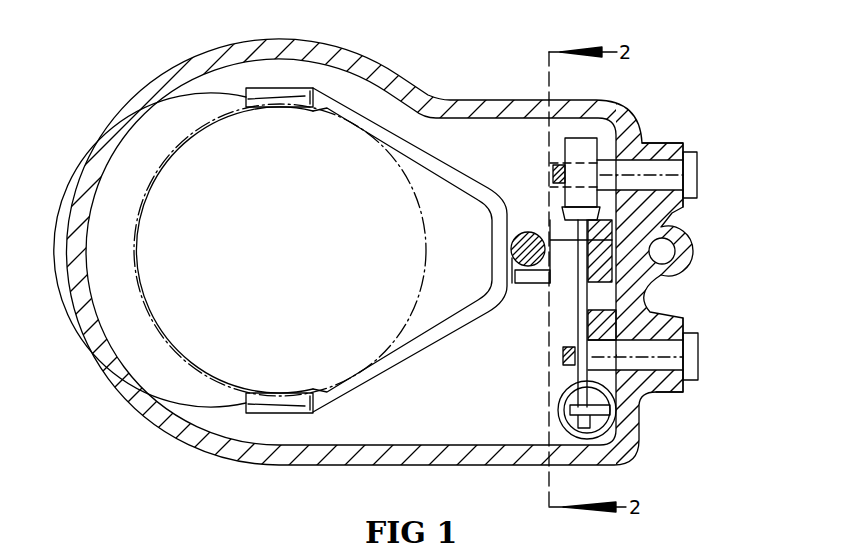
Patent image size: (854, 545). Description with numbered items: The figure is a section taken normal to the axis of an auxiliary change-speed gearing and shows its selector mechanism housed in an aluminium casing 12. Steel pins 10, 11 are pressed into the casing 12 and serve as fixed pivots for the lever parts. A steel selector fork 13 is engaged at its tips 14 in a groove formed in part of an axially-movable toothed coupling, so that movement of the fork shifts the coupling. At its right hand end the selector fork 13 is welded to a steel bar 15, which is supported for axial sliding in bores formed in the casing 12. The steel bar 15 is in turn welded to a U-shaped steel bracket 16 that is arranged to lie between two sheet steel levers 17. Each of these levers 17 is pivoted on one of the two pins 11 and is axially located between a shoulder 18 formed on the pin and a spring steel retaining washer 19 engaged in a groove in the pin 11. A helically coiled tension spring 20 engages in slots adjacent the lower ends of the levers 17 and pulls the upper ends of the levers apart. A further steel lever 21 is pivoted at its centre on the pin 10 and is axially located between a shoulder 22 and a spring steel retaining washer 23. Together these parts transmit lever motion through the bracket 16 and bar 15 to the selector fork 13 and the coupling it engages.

The steel pin 10 is at (697, 161).
The steel pin 11 is at (697, 367).
The aluminium casing 12 is at (405, 90).
The steel selector fork 13 is at (461, 174).
The tips 14 is at (289, 96).
The steel bar 15 is at (510, 253).
The U-shaped steel bracket 16 is at (602, 263).
The sheet steel lever 17 is at (583, 304).
The shoulder 18 is at (632, 372).
The spring steel retaining washer 19 is at (575, 366).
The helically coiled tension spring 20 is at (605, 430).
The steel lever 21 is at (574, 140).
The shoulder 22 is at (618, 158).
The spring steel retaining washer 23 is at (553, 170).